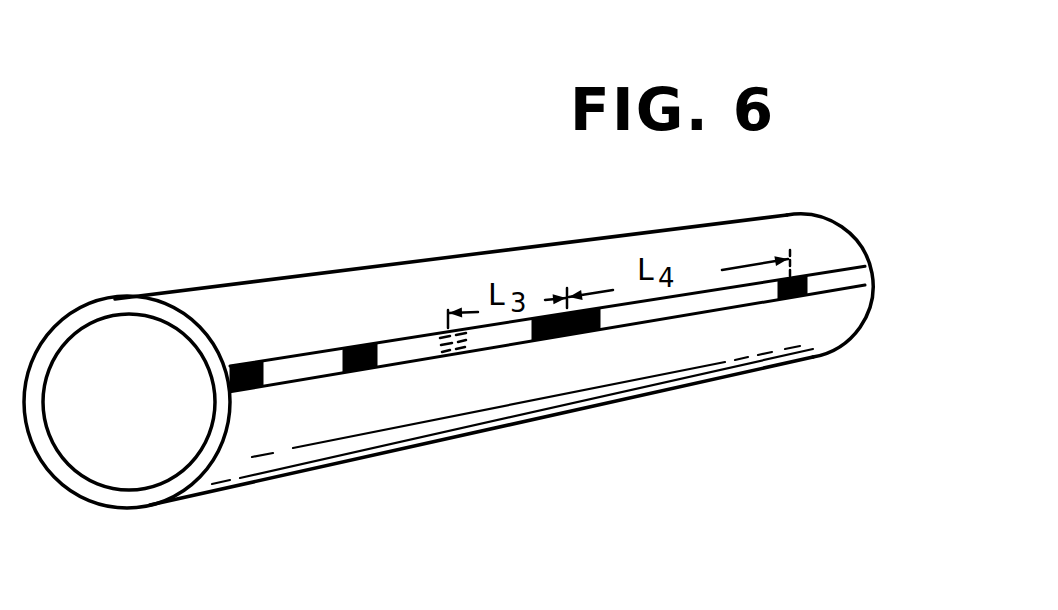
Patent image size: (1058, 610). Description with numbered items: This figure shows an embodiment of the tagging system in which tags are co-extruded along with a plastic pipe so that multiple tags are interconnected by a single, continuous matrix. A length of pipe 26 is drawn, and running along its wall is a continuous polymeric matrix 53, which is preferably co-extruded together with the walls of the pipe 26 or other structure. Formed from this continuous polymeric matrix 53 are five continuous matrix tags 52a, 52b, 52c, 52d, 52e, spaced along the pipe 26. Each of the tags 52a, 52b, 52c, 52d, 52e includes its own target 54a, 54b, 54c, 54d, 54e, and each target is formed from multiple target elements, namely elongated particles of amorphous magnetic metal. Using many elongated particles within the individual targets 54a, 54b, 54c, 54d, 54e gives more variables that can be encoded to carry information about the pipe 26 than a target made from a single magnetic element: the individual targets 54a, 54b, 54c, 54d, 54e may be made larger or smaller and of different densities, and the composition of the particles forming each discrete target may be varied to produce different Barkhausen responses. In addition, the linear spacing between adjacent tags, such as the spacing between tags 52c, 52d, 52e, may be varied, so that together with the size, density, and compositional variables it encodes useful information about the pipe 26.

The pipe 26 is at (446, 407).
The continuous polymeric matrix 53 is at (230, 388).
The continuous matrix tag 52a is at (250, 364).
The continuous matrix tag 52b is at (362, 344).
The continuous matrix tag 52c is at (443, 331).
The continuous matrix tag 52d is at (546, 340).
The continuous matrix tag 52e is at (795, 297).
The target 54a is at (253, 392).
The target 54b is at (367, 371).
The target 54c is at (455, 354).
The target 54d is at (590, 332).
The target 54e is at (782, 290).